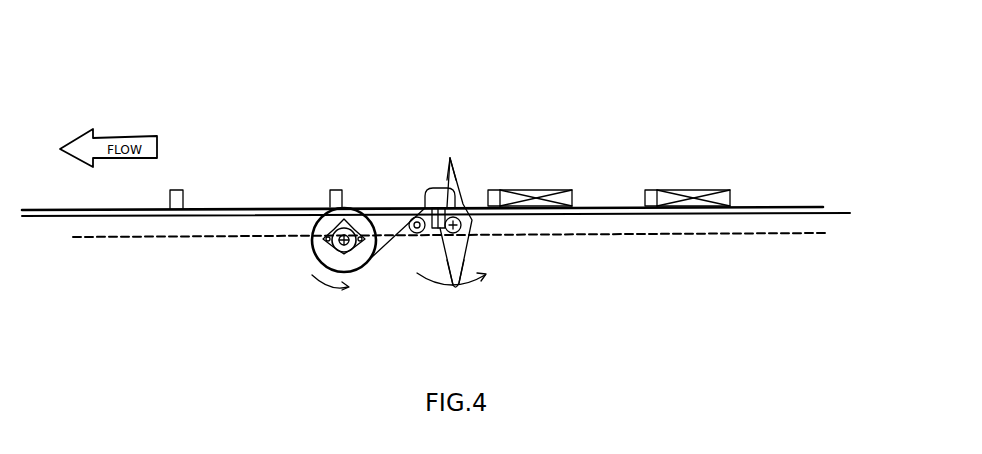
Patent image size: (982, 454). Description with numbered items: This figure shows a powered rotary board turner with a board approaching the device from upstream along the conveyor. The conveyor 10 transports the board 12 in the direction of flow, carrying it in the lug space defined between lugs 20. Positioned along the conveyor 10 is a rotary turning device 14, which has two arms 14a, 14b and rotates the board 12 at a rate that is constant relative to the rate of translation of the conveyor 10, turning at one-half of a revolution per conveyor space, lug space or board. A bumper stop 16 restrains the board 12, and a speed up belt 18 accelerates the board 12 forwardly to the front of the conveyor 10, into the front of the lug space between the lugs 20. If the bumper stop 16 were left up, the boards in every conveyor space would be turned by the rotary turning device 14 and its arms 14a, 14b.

The conveyor 10 is at (436, 129).
The board 12 is at (557, 146).
The rotary turning device 14 is at (475, 186).
The arm 14a is at (404, 134).
The arm 14b is at (421, 294).
The bumper stop 16 is at (360, 160).
The speed up belt 18 is at (312, 268).
The lugs 20 is at (693, 146).